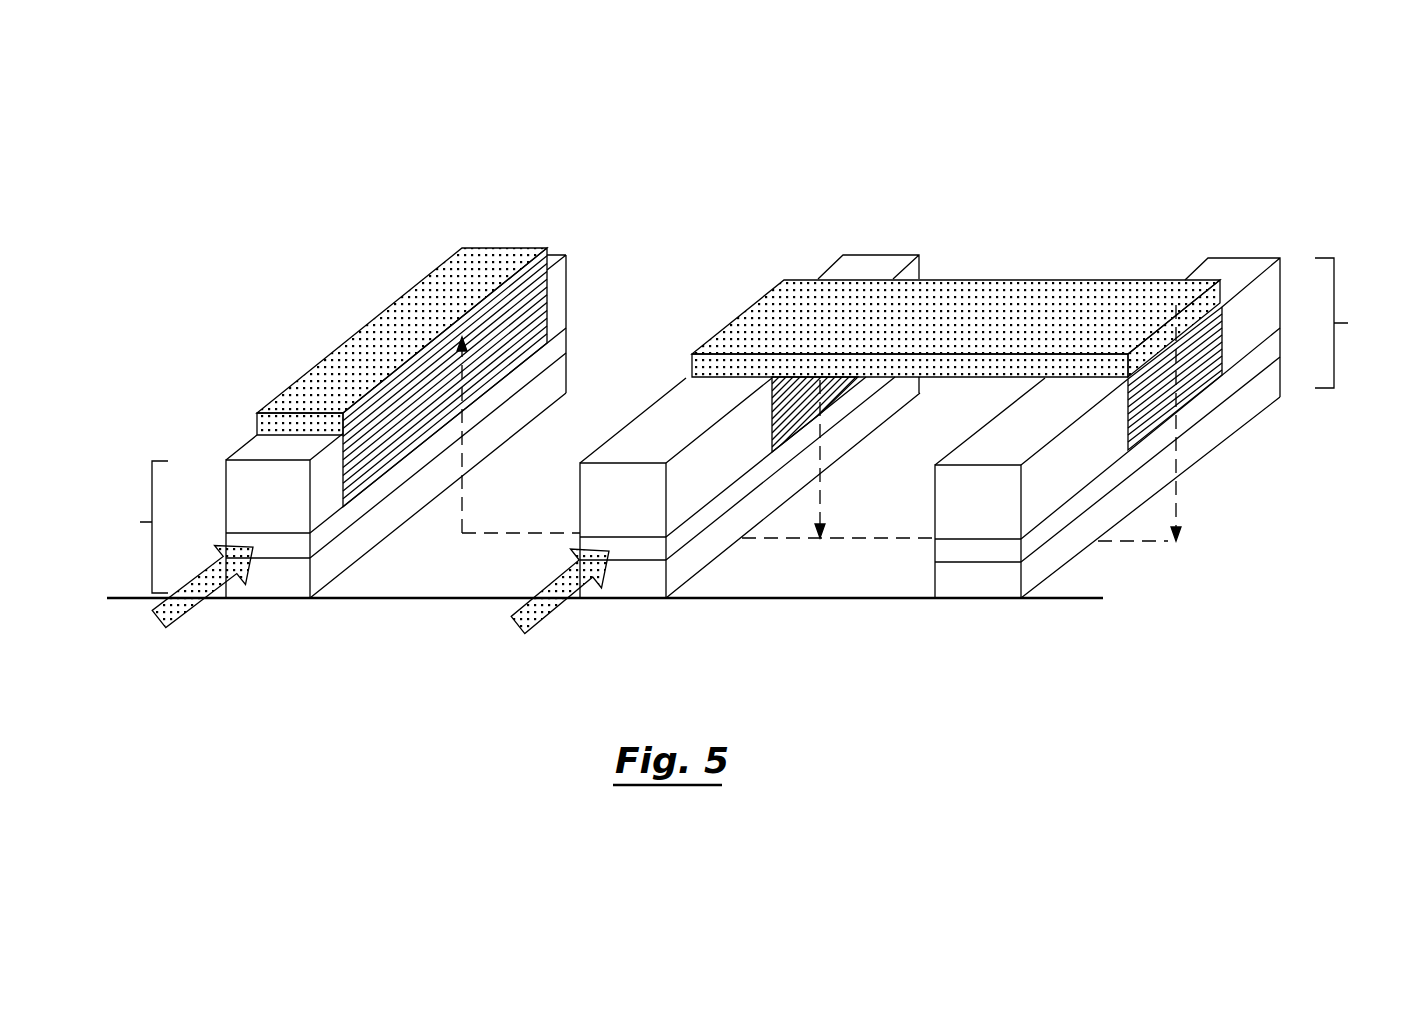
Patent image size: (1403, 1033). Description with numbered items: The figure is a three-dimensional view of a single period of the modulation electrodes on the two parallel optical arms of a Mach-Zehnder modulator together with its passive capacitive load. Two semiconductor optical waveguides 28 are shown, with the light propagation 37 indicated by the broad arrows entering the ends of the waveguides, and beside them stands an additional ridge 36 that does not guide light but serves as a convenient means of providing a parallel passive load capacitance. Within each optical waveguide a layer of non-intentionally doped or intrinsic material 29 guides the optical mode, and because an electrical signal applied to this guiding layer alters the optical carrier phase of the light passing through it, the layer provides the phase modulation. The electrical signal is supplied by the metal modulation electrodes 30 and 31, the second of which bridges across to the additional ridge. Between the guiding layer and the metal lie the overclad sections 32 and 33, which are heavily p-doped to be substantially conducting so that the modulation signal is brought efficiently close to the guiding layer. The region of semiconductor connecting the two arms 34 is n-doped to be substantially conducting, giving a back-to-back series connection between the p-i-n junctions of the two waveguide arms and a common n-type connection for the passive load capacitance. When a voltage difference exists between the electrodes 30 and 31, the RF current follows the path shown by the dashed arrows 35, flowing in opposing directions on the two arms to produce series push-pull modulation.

The semiconductor optical waveguide 28 is at (132, 527).
The intrinsic guiding layer 29 is at (673, 542).
The metal modulation electrode 30 is at (357, 338).
The metal modulation electrode 31 is at (773, 318).
The heavily p-doped overclad section 32 is at (517, 338).
The heavily p-doped overclad section 33 is at (835, 397).
The n-doped connecting semiconductor region 34 is at (462, 601).
The RF current flow path 35 is at (1127, 545).
The additional ridge 36 is at (1355, 323).
The light propagation 37 is at (178, 605).